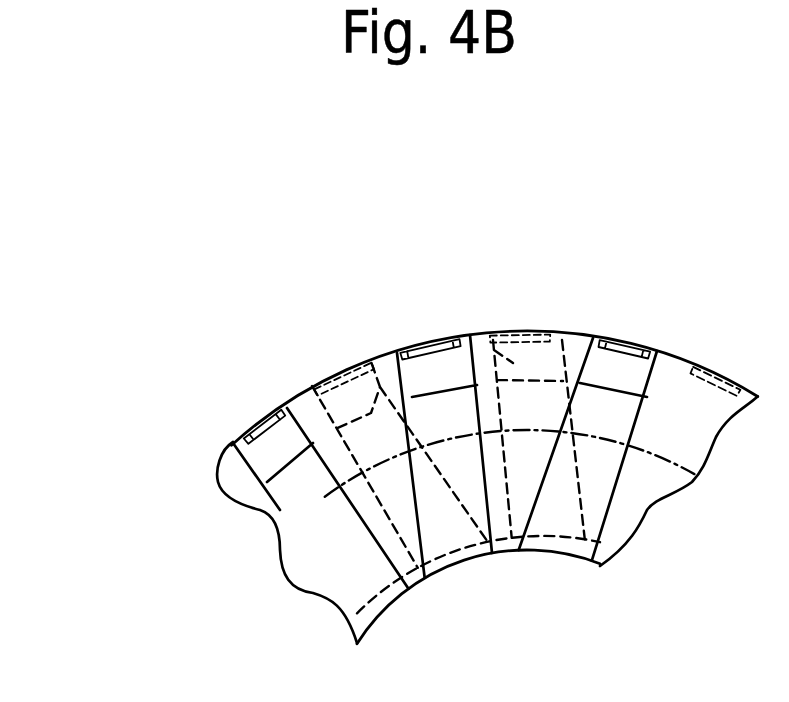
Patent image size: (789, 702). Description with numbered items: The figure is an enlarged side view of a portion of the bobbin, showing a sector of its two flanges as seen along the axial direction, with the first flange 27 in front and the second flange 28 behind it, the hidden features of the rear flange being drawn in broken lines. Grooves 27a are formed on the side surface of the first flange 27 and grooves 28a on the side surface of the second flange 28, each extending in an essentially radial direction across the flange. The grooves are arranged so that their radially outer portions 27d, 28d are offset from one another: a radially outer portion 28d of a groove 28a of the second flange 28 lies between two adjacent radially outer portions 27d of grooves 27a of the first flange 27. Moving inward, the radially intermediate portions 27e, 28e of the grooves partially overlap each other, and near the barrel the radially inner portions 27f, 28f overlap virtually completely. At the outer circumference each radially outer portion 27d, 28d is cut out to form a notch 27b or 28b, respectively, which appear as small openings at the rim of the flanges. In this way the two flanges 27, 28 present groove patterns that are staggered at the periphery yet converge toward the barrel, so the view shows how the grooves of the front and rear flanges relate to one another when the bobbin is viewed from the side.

The first flange 27 is at (574, 333).
The groove 27a is at (478, 330).
The notch 27b is at (380, 386).
The radially outer portion 27d is at (533, 360).
The radially intermediate portion 27e is at (560, 498).
The radially inner portion 27f is at (563, 545).
The second flange 28 is at (662, 349).
The groove 28a is at (640, 372).
The notch 28b is at (283, 443).
The radially outer portion 28d is at (260, 457).
The radially intermediate portion 28e is at (297, 497).
The radially inner portion 28f is at (370, 612).